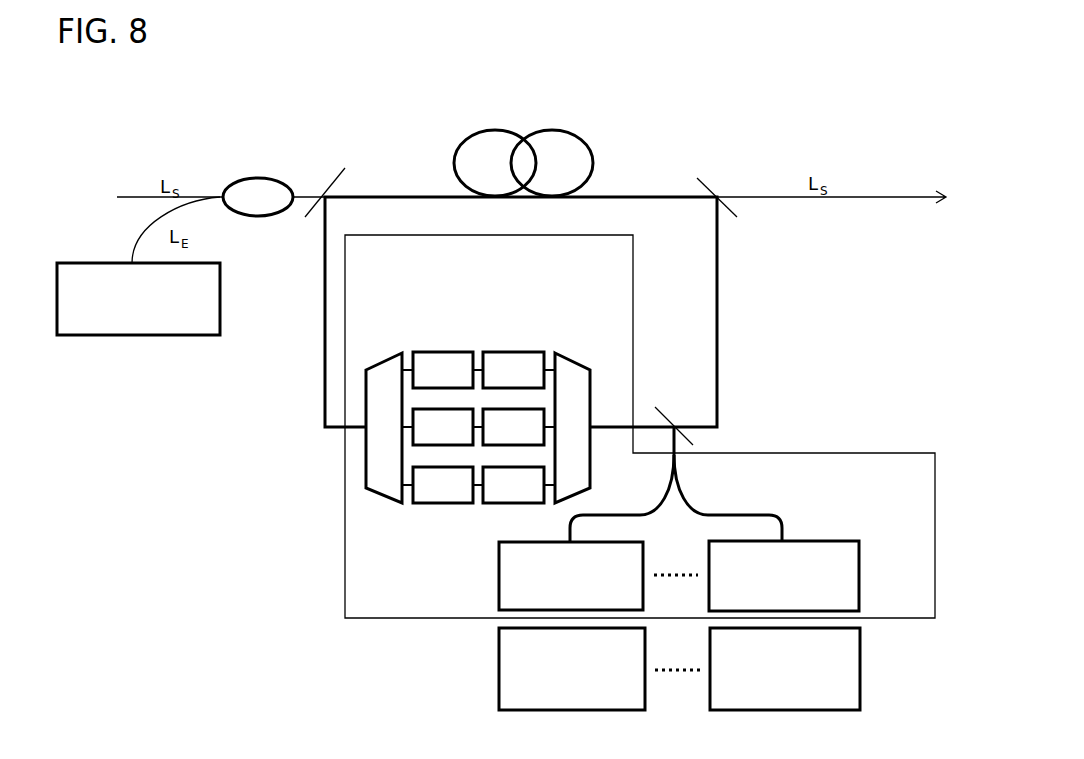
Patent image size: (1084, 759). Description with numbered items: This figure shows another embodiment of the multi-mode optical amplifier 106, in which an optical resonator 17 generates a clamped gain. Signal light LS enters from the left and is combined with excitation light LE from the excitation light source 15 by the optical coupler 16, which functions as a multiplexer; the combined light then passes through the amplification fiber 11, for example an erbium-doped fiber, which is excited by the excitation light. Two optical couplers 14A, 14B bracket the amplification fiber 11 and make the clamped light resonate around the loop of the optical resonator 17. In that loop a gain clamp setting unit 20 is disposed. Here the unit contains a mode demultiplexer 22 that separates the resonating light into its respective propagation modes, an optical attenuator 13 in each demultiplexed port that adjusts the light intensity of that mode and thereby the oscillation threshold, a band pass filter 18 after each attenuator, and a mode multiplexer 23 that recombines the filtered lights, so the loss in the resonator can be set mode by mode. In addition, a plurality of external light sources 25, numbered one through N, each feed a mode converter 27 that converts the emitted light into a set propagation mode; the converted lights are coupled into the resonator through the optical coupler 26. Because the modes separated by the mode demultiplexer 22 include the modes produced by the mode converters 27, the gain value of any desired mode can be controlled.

The optical amplifier 106 is at (818, 102).
The amplification fiber 11 is at (592, 150).
The optical attenuator 13 is at (444, 348).
The optical coupler 14A is at (322, 185).
The optical coupler 14B is at (705, 185).
The excitation light source 15 is at (102, 263).
The optical coupler 16 is at (262, 178).
The optical resonator 17 is at (790, 316).
The band pass filter 18 is at (514, 348).
The gain clamp setting unit 20 is at (828, 452).
The mode demultiplexer 22 is at (382, 363).
The mode multiplexer 23 is at (577, 363).
The external light source 25 is at (499, 667).
The optical coupler 26 is at (665, 405).
The mode converter 27 is at (499, 573).